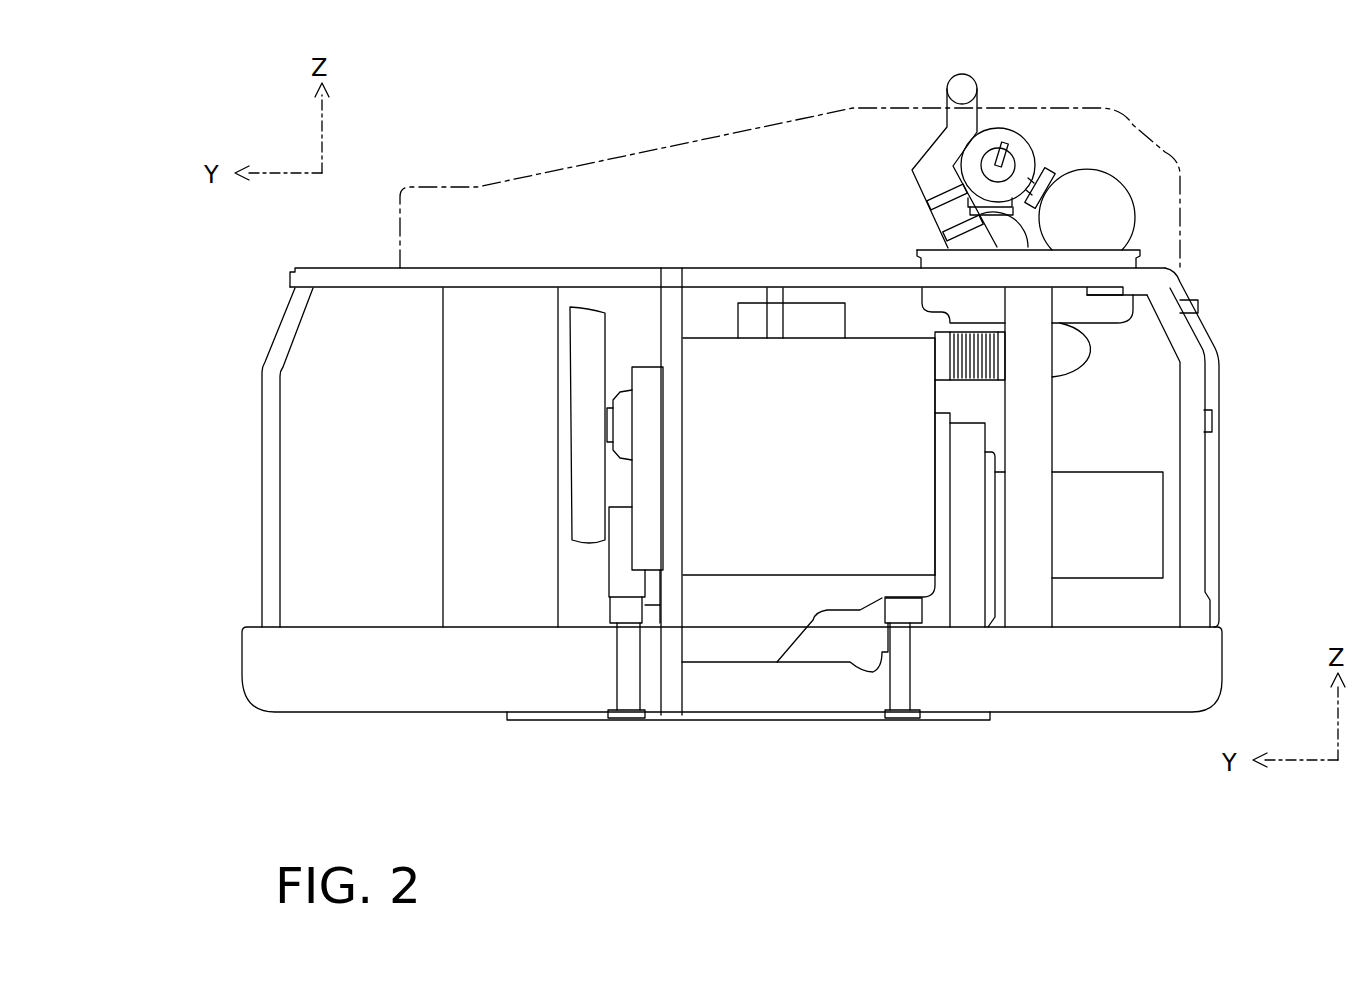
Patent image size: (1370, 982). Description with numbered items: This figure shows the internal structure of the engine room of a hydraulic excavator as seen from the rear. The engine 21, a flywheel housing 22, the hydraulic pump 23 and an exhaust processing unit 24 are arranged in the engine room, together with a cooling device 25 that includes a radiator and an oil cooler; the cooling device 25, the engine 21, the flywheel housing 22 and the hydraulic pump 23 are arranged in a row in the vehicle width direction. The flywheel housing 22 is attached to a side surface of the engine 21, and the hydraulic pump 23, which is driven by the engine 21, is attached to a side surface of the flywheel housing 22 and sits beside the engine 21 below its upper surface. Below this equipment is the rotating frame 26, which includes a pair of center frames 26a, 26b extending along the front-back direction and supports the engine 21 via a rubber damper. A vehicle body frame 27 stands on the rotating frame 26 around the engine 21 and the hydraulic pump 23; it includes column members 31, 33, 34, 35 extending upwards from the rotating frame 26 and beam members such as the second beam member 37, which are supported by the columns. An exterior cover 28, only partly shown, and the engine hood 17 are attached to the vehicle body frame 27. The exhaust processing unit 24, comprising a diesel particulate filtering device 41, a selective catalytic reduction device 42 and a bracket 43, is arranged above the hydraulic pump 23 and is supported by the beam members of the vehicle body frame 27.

The engine hood 17 is at (770, 127).
The engine 21 is at (813, 538).
The flywheel housing 22 is at (967, 617).
The hydraulic pump 23 is at (1088, 560).
The exhaust processing unit 24 is at (1016, 130).
The cooling device 25 is at (470, 320).
The rotating frame 26 is at (588, 730).
The center frame 26a is at (630, 677).
The center frame 26b is at (900, 680).
The vehicle body frame 27 is at (642, 252).
The exterior cover 28 is at (1215, 337).
The column member 31 is at (1193, 478).
The column member 33 is at (1027, 598).
The column member 34 is at (670, 702).
The column member 35 is at (270, 403).
The second beam member 37 is at (838, 270).
The diesel particulate filtering device 41 is at (1120, 180).
The selective catalytic reduction device 42 is at (936, 240).
The bracket 43 is at (1130, 267).